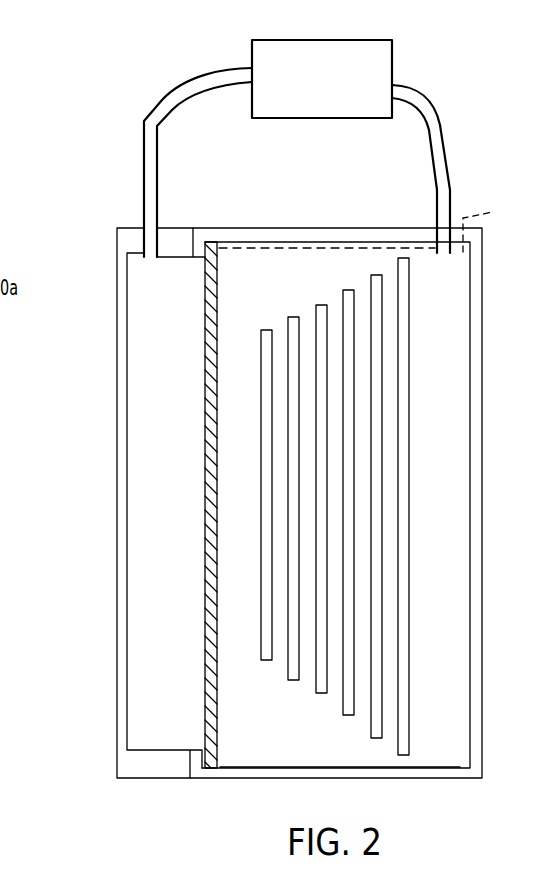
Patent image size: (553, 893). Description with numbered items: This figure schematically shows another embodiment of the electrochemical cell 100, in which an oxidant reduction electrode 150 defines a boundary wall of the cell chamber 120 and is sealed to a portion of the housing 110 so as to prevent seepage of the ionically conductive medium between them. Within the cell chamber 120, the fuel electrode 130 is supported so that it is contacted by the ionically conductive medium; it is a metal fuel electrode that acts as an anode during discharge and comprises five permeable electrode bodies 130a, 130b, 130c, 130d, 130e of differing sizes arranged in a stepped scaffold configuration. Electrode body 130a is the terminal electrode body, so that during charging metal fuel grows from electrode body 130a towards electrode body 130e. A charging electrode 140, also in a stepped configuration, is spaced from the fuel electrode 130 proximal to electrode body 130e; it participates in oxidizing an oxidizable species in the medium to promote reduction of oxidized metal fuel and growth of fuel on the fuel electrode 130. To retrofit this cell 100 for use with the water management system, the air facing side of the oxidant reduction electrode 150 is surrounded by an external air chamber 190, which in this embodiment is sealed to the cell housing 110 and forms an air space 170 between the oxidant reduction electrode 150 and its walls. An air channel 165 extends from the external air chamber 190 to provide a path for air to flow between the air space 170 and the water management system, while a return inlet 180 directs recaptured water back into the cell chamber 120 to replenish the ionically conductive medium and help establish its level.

The electrochemical cell 100 is at (194, 190).
The cell housing 110 is at (328, 240).
The cell chamber 120 is at (246, 748).
The fuel electrode 130 is at (403, 758).
The permeable electrode body 130a is at (408, 268).
The permeable electrode body 130b is at (376, 276).
The permeable electrode body 130c is at (350, 292).
The permeable electrode body 130d is at (323, 305).
The permeable electrode body 130e is at (293, 318).
The charging electrode 140 is at (265, 345).
The oxidant reduction electrode 150 is at (210, 300).
The air channel 165 is at (152, 168).
The air space 170 is at (150, 428).
The return inlet 180 is at (450, 160).
The external air chamber 190 is at (118, 475).